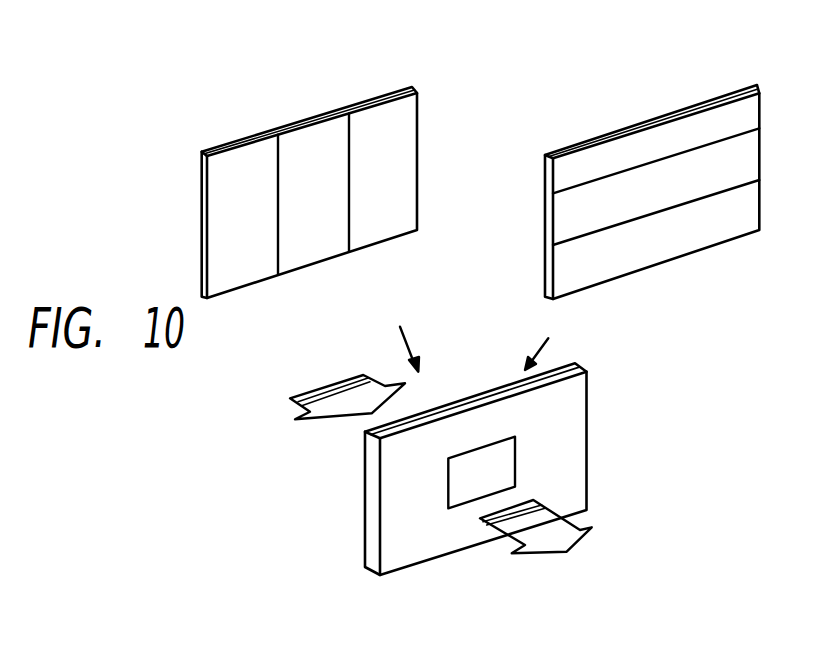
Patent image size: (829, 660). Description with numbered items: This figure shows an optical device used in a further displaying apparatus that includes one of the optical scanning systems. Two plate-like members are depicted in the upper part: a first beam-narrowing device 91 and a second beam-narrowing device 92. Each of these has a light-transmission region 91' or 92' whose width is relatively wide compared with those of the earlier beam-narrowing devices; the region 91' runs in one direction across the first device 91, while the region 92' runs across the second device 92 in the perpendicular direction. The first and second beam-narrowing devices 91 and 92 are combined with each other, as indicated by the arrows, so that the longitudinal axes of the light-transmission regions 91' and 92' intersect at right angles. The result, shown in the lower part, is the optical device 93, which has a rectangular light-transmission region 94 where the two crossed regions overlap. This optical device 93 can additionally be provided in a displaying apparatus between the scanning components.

The first beam-narrowing device 91 is at (309, 166).
The light-transmission region 91' is at (313, 166).
The second beam-narrowing device 92 is at (652, 173).
The light-transmission region 92' is at (680, 185).
The optical device 93 is at (587, 395).
The rectangular light-transmission region 94 is at (507, 468).